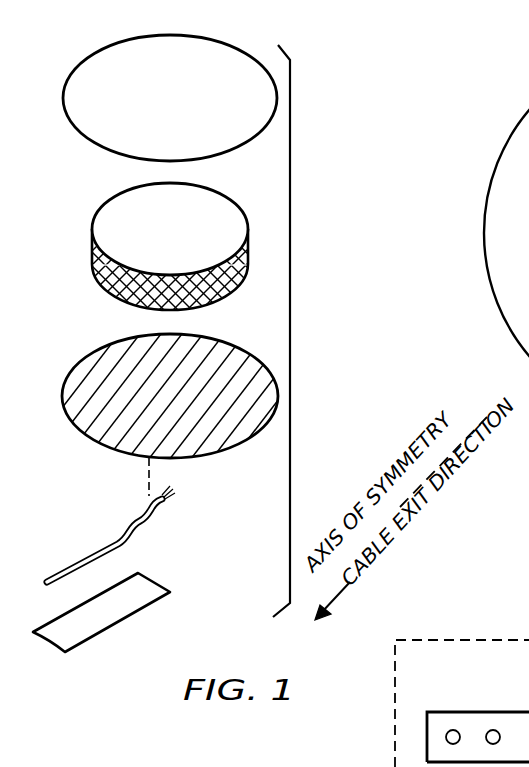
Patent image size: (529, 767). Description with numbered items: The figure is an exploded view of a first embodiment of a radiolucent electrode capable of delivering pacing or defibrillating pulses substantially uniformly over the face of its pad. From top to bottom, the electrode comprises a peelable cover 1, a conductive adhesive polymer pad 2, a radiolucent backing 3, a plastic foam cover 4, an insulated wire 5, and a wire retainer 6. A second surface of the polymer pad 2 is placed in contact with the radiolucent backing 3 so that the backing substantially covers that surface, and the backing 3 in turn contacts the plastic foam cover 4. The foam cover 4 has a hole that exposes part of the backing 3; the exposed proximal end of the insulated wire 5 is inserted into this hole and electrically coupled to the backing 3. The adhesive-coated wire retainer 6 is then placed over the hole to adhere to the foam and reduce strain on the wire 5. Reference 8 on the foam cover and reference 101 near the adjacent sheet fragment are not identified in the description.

The peelable cover 1 is at (222, 42).
The conductive adhesive polymer pad 2 is at (218, 193).
The radiolucent backing 3 is at (233, 295).
The plastic foam cover 4 is at (239, 438).
The insulated wire 5 is at (166, 507).
The wire retainer 6 is at (167, 590).
The center point 8 is at (169, 377).
The enclosure 101 is at (508, 640).